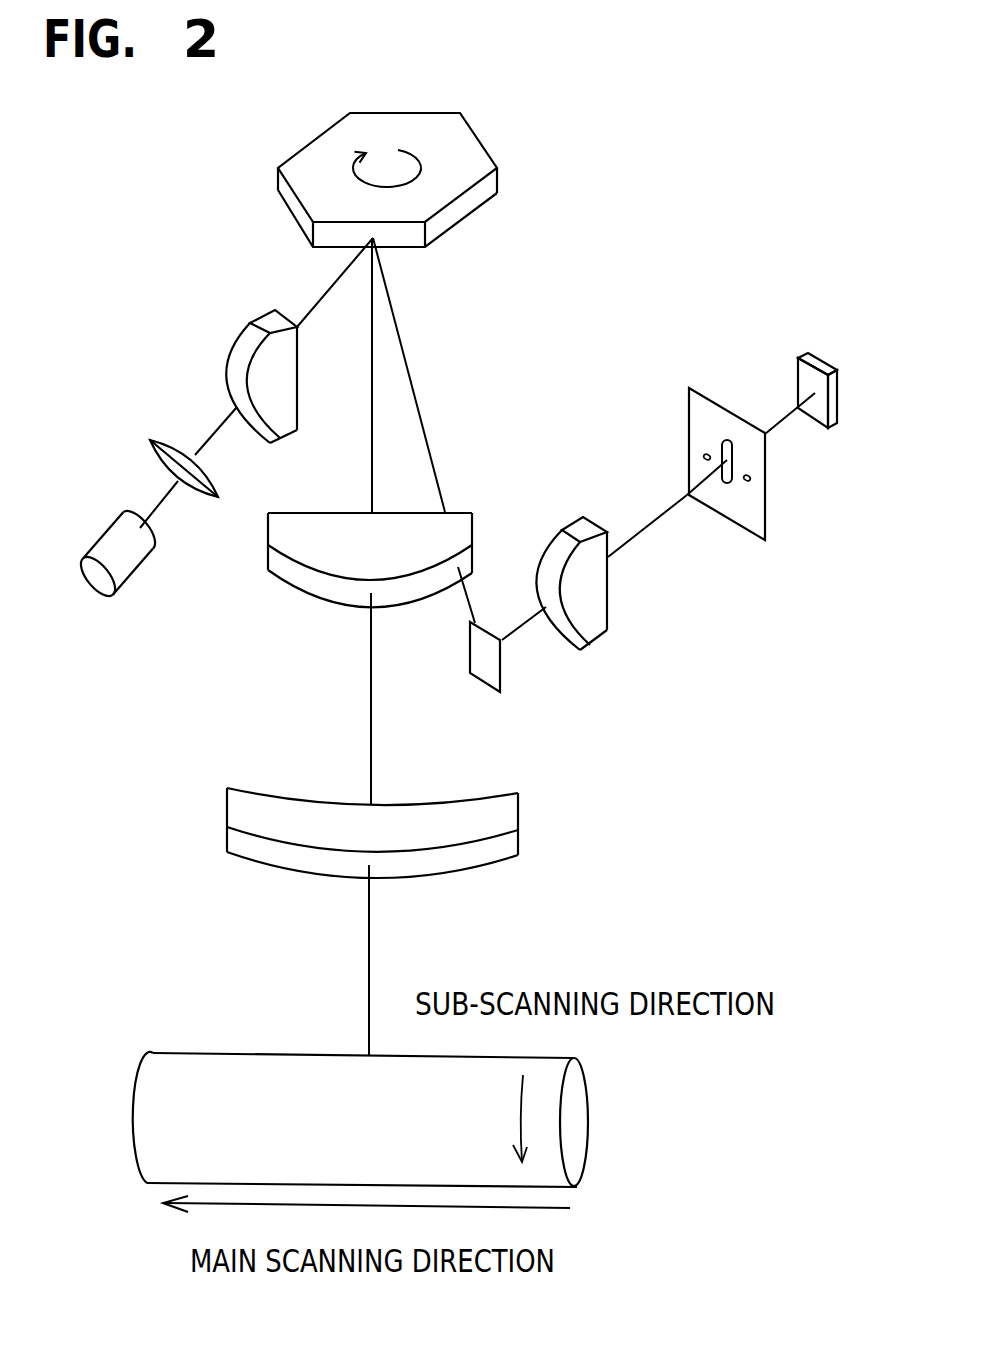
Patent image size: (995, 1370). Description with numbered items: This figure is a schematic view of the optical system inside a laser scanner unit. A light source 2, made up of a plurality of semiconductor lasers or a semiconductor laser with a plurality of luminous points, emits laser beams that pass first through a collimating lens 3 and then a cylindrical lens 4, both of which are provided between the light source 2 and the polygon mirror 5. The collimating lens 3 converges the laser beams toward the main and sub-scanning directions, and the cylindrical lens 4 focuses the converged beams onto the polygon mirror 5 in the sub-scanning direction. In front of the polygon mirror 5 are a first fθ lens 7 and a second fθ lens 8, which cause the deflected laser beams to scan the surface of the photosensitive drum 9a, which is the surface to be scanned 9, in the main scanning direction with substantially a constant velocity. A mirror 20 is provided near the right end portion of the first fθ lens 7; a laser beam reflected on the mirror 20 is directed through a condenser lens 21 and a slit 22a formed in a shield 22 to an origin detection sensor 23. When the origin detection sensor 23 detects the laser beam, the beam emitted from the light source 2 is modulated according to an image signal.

The light source 2 is at (142, 563).
The collimating lens 3 is at (170, 437).
The cylindrical lens 4 is at (262, 318).
The polygon mirror 5 is at (478, 137).
The first fθ lens 7 is at (455, 513).
The second fθ lens 8 is at (518, 820).
The surface to be scanned 9 is at (197, 1050).
The photosensitive drum 9a is at (167, 1157).
The mirror 20 is at (505, 672).
The condenser lens 21 is at (608, 593).
The shield 22 is at (689, 410).
The slit 22a is at (730, 480).
The origin detection sensor 23 is at (798, 368).